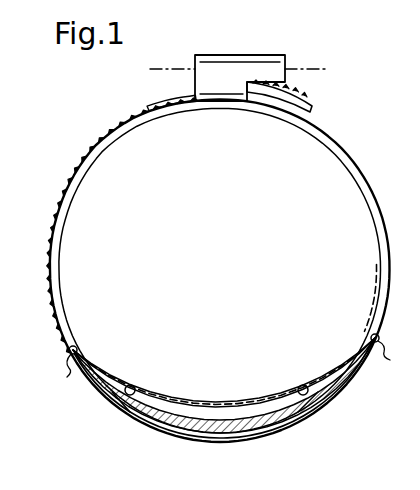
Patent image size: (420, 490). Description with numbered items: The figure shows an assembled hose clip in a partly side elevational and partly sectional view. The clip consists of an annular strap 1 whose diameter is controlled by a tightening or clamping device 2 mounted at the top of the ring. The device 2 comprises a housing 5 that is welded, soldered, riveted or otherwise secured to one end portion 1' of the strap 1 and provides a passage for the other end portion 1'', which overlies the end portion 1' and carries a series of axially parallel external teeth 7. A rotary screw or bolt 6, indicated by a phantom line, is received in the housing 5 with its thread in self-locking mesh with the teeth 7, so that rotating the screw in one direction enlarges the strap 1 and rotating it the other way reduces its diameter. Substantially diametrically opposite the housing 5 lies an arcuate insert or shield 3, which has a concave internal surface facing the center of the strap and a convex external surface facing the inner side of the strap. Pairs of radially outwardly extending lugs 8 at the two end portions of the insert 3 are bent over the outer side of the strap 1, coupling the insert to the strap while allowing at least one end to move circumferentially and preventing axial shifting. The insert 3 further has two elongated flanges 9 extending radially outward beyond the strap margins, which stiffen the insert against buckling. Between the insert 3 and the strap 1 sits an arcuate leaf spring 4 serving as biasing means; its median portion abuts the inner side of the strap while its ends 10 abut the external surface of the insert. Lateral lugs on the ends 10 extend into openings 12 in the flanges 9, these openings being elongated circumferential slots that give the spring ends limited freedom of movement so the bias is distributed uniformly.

The annular strap 1 is at (220, 271).
The end portion of the strap 1' is at (279, 117).
The other end portion of the strap 1'' is at (159, 126).
The tightening or clamping device 2 is at (304, 85).
The arcuate insert or shield 3 is at (227, 399).
The biasing means / leaf spring 4 is at (178, 434).
The housing 5 is at (217, 56).
The rotary screw or bolt 6 is at (317, 63).
The external projections or teeth 7 is at (97, 139).
The projections or lugs 8 is at (70, 364).
The flanges 9 is at (265, 440).
The ends of the leaf spring 10 is at (134, 384).
The openings 12 is at (122, 404).